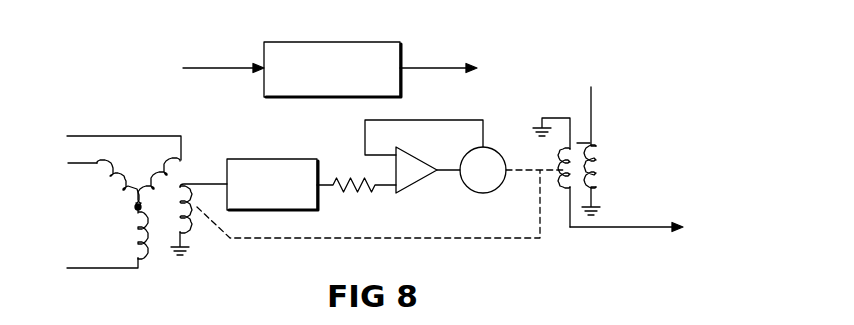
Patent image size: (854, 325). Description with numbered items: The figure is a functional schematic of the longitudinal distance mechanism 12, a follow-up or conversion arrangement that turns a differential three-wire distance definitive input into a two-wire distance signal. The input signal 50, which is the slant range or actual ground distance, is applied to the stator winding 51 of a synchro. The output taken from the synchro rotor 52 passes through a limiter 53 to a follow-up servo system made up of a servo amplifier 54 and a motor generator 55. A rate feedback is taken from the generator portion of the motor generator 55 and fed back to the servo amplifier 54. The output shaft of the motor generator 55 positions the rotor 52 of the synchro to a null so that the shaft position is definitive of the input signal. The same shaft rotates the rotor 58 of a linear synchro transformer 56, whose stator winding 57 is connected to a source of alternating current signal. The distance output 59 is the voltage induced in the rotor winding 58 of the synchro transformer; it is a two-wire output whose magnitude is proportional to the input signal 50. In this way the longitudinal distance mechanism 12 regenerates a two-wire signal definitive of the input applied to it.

The longitudinal distance mechanism 12 is at (372, 42).
The input signal 50 is at (218, 70).
The stator winding 51 is at (148, 213).
The synchro rotor 52 is at (367, 212).
The limiter 53 is at (284, 159).
The servo amplifier 54 is at (410, 181).
The motor generator 55 is at (495, 188).
The linear synchro transformer 56 is at (590, 143).
The stator winding 57 is at (598, 168).
The rotor winding 58 is at (562, 163).
The distance output 59 is at (428, 69).